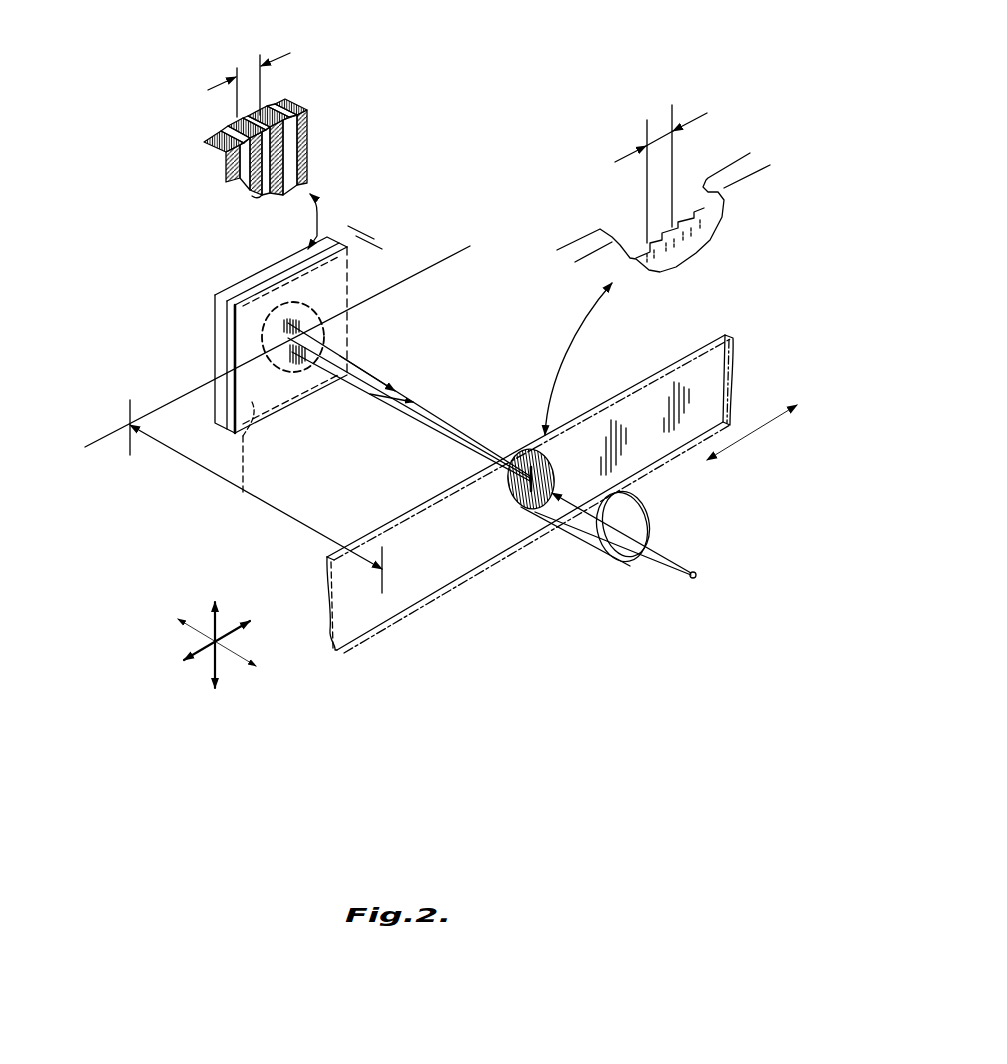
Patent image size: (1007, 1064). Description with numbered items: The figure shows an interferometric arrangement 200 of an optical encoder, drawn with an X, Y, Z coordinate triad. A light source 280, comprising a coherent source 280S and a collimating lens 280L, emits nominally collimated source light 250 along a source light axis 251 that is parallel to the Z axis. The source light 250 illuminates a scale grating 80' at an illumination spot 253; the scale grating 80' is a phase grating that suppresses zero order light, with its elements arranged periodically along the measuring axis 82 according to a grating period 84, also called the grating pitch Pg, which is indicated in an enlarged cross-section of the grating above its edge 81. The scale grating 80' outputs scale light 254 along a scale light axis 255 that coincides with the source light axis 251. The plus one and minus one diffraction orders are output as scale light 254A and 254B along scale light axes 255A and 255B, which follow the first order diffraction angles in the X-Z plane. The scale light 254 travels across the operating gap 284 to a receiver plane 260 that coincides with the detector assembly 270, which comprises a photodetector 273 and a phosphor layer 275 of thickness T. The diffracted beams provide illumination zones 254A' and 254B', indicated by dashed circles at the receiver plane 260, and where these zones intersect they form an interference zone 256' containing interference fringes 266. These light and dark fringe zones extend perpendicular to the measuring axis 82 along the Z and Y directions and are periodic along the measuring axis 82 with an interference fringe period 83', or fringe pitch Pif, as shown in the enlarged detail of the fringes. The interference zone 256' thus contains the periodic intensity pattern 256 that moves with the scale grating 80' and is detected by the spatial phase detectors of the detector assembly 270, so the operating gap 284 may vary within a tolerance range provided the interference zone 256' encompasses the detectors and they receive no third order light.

The interferometric arrangement 200 is at (557, 62).
The interference fringe period 83' is at (249, 67).
The interference fringe pitch Pif is at (250, 76).
The interference fringes 266 is at (318, 147).
The thickness of the phosphor layer T is at (392, 250).
The illumination zone 254A' is at (380, 264).
The interference zone 256' is at (254, 292).
The illumination zone 254B' is at (194, 303).
The periodic intensity pattern 256 is at (244, 317).
The detector assembly 270 is at (183, 335).
The phosphor layer 275 is at (232, 338).
The photodetector 273 is at (217, 345).
The operating gap 284 is at (197, 466).
The receiver plane 260 is at (242, 494).
The scale light 254 is at (455, 452).
The scale light axis 255 is at (388, 362).
The scale light 254A is at (432, 354).
The scale light axis 255A is at (414, 400).
The scale light 254B is at (333, 423).
The scale light axis 255B is at (410, 415).
The scale grating 80' is at (530, 484).
The scale substrate edge 81 is at (356, 654).
The measuring axis 82 is at (760, 428).
The grating period 84 is at (655, 162).
The grating pitch Pg is at (650, 155).
The illumination spot 253 is at (518, 512).
The light source 280 is at (723, 557).
The collimating lens 280L is at (640, 500).
The coherent source 280S is at (696, 578).
The source light axis 251 is at (577, 532).
The source light 250 is at (587, 528).
The X axis X is at (230, 634).
The Y axis Y is at (214, 628).
The Z axis Z is at (206, 625).